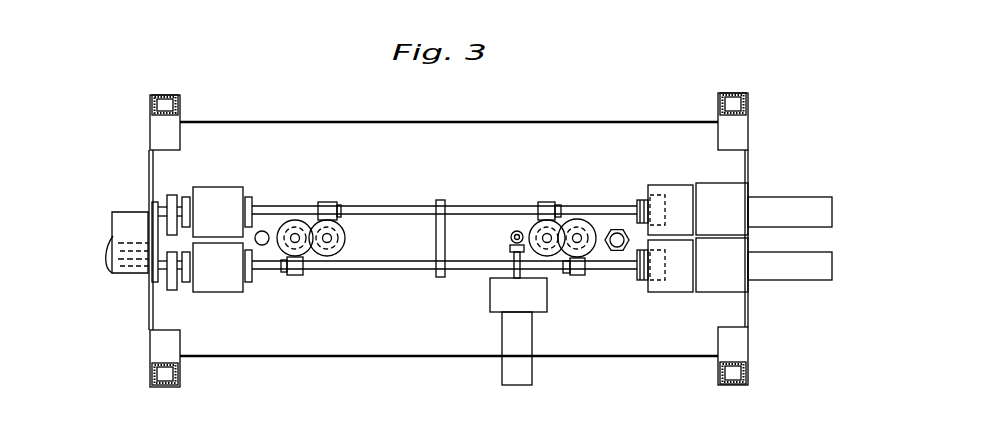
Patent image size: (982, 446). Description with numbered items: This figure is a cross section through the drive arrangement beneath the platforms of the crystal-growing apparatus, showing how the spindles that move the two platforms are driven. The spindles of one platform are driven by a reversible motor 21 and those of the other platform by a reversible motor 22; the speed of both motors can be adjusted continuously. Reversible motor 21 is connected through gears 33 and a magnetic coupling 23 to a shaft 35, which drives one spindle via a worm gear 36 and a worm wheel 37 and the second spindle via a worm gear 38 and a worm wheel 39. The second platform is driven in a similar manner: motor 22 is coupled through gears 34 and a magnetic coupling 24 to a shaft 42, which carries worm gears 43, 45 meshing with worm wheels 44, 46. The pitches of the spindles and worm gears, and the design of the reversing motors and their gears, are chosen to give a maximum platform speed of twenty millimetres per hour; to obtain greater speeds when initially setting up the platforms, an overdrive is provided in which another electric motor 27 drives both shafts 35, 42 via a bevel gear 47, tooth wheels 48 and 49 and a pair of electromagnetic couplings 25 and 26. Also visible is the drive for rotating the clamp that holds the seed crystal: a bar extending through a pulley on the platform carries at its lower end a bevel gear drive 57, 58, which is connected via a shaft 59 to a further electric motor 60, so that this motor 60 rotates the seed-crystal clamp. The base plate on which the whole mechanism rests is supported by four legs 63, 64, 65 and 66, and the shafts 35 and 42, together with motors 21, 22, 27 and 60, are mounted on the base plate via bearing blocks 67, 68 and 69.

The reversible motor 21 is at (785, 208).
The reversible motor 22 is at (798, 272).
The magnetic coupling 23 is at (673, 197).
The magnetic coupling 24 is at (668, 286).
The electromagnetic coupling 25 is at (222, 197).
The electromagnetic coupling 26 is at (225, 283).
The electric motor 27 is at (132, 270).
The gears 33 is at (722, 197).
The gears 34 is at (716, 282).
The shaft 35 is at (598, 208).
The worm gear 36 is at (548, 202).
The worm wheel 37 is at (540, 222).
The worm gear 38 is at (326, 203).
The worm wheel 39 is at (341, 237).
The shaft 42 is at (393, 269).
The worm gear 43 is at (575, 274).
The worm wheel 44 is at (588, 253).
The worm gear 45 is at (296, 276).
The worm wheel 46 is at (307, 250).
The bevel gear 47 is at (173, 243).
The tooth wheel 48 is at (172, 200).
The tooth wheel 49 is at (172, 284).
The bevel gear drive 57 is at (513, 231).
The bevel gear drive 58 is at (509, 246).
The shaft 59 is at (514, 274).
The electric motor 60 is at (510, 372).
The leg 63 is at (160, 105).
The leg 64 is at (738, 103).
The leg 65 is at (730, 372).
The leg 66 is at (162, 375).
The bearing block 67 is at (250, 205).
The bearing block 68 is at (440, 200).
The bearing block 69 is at (641, 200).